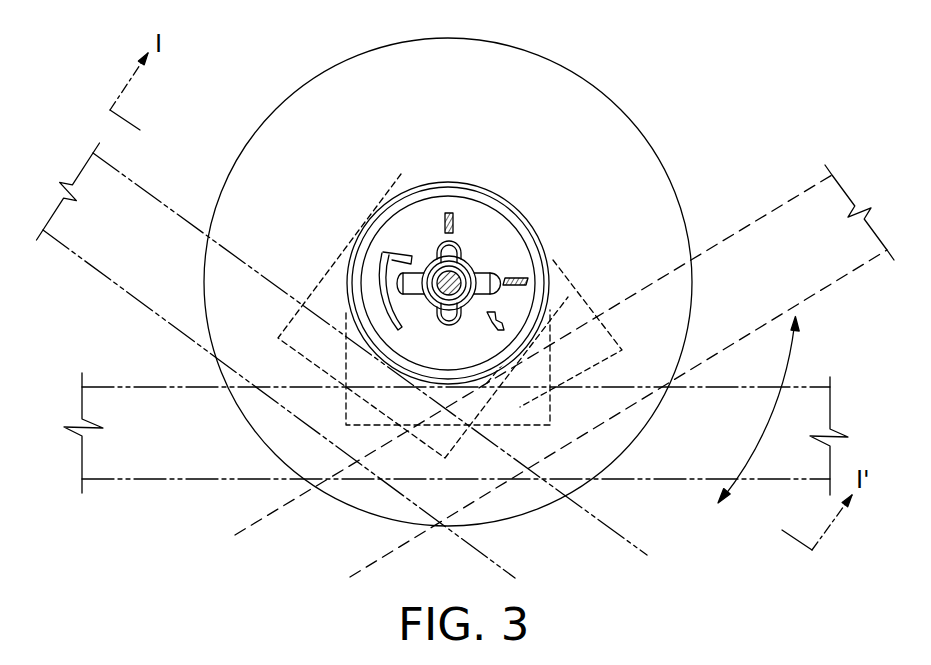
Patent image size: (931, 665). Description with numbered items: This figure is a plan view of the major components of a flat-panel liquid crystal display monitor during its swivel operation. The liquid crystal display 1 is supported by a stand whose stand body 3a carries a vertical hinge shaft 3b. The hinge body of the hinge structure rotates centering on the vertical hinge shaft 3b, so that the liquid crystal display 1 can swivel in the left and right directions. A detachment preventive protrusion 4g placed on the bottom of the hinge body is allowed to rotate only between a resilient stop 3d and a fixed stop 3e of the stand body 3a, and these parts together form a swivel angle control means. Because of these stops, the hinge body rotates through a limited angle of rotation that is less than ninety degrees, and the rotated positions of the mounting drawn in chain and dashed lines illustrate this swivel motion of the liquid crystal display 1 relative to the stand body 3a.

The liquid crystal display 1 is at (204, 450).
The stand body 3a is at (665, 344).
The vertical hinge shaft 3b is at (474, 266).
The resilient stop 3d is at (402, 254).
The fixed stop 3e is at (502, 328).
The detachment preventive protrusion 4g is at (453, 213).